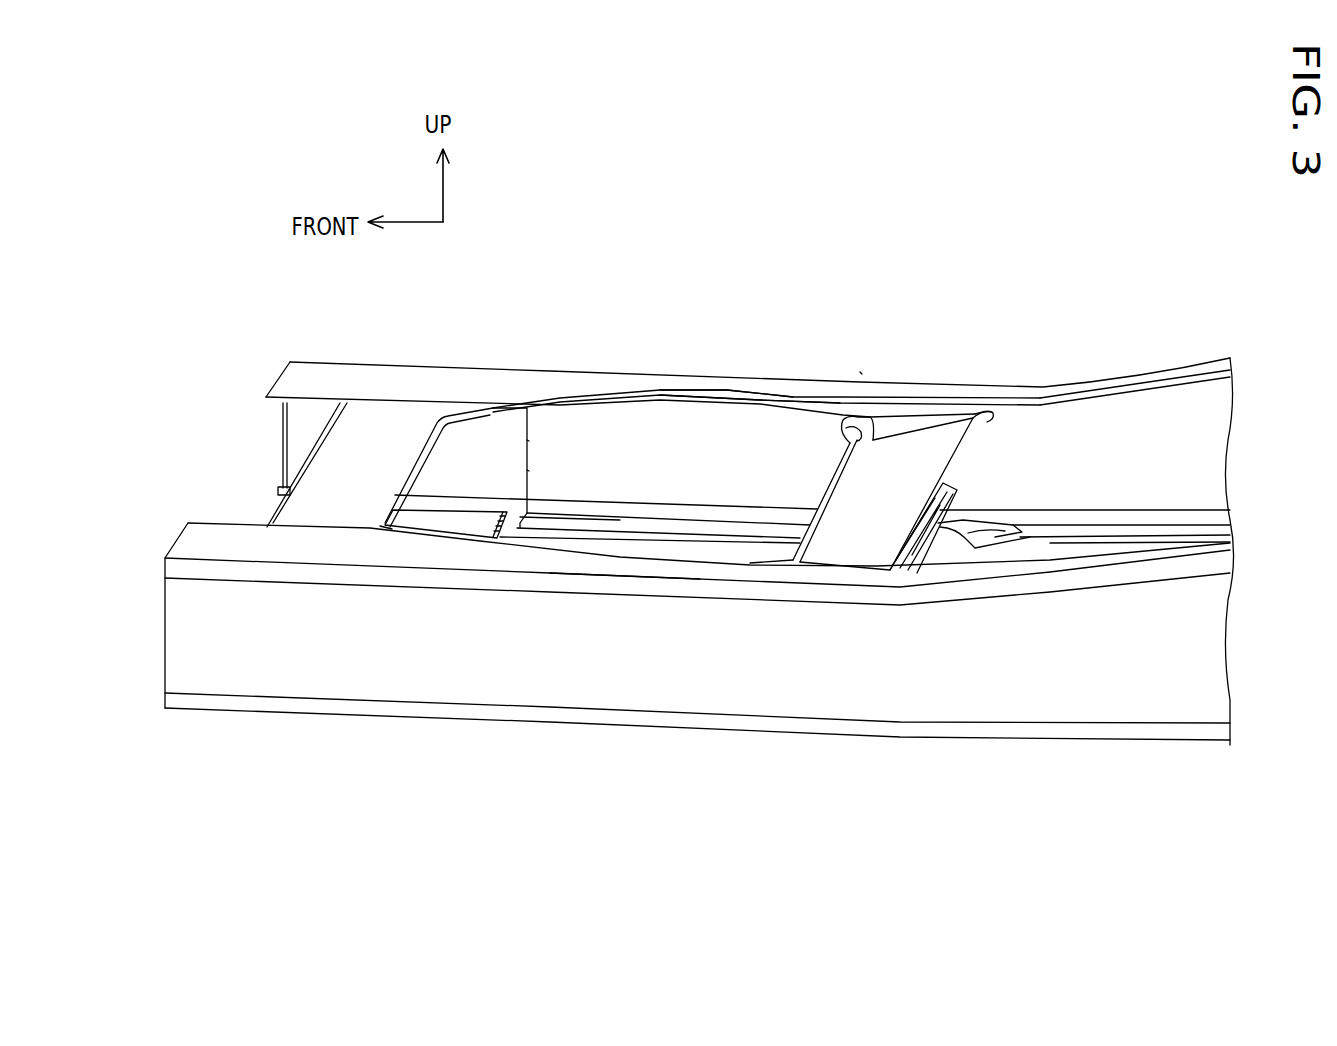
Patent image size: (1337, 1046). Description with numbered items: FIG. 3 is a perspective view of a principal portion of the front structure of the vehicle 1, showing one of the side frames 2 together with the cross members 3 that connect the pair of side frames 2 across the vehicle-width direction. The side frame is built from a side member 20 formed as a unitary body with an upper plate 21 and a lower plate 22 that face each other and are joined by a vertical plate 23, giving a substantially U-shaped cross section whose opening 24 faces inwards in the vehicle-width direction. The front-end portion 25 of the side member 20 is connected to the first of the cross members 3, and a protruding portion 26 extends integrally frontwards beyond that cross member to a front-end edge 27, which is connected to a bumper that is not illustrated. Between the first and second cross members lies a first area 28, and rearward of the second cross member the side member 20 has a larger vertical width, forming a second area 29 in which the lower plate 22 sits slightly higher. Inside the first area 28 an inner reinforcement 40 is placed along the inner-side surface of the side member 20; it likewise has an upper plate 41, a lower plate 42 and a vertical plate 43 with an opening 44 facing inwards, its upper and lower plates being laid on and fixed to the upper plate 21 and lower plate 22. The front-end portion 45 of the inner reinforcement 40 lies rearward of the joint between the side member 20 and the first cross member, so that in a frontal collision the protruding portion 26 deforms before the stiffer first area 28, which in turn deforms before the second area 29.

The vehicle 1 is at (857, 373).
The side frame 2 is at (1043, 380).
The cross member 3 is at (303, 512).
The side member 20 is at (800, 380).
The upper plate 21 is at (763, 380).
The lower plate 22 is at (678, 568).
The vertical plate 23 is at (453, 443).
The opening 24 is at (733, 395).
The front-end portion 25 is at (382, 380).
The protruding portion 26 is at (318, 372).
The front-end edge 27 is at (275, 378).
The first area 28 is at (657, 377).
The second area 29 is at (1133, 377).
The inner reinforcement 40 is at (535, 427).
The upper plate 41 is at (843, 403).
The lower plate 42 is at (587, 507).
The vertical plate 43 is at (537, 443).
The opening 44 is at (707, 395).
The front-end portion 45 is at (520, 460).